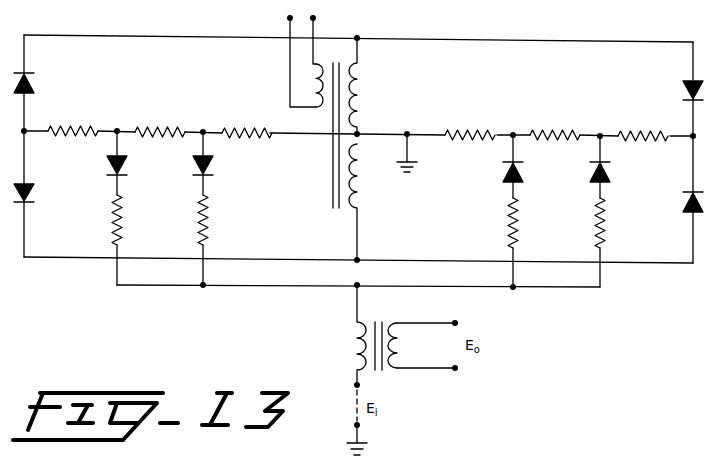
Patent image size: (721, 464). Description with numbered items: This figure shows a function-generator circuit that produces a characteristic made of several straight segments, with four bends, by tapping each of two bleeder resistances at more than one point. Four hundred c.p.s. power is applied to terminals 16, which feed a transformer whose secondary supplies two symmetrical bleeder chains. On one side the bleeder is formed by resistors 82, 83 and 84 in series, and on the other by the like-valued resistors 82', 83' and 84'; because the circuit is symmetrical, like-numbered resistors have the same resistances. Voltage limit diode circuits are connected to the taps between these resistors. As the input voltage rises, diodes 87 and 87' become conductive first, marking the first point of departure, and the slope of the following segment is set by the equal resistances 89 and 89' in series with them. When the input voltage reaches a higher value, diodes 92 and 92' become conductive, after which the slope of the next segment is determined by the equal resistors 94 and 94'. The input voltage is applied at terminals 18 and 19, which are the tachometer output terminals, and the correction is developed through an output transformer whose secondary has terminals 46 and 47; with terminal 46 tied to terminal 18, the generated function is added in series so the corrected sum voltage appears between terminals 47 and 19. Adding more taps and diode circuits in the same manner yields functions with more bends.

The terminals 16 is at (313, 18).
The resistor 82' is at (262, 145).
The resistor 83' is at (170, 120).
The resistor 84' is at (80, 120).
The diode 92' is at (96, 168).
The diode 87' is at (184, 168).
The resistor 94' is at (137, 220).
The resistor 89' is at (223, 220).
The resistor 82 is at (460, 124).
The resistor 83 is at (546, 124).
The resistor 84 is at (634, 124).
The diode 87 is at (487, 173).
The diode 92 is at (581, 173).
The resistor 89 is at (491, 223).
The resistor 94 is at (584, 223).
The output terminal 47 is at (457, 322).
The output terminal 46 is at (457, 369).
The tachometer output terminal 18 is at (360, 386).
The tachometer output terminal 19 is at (360, 426).